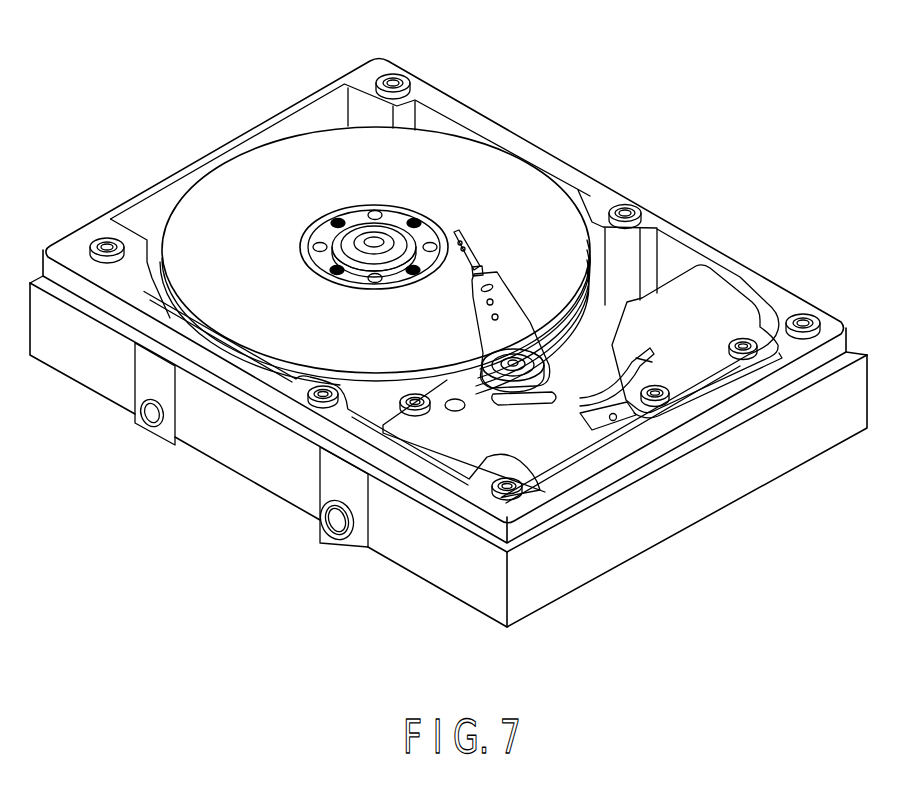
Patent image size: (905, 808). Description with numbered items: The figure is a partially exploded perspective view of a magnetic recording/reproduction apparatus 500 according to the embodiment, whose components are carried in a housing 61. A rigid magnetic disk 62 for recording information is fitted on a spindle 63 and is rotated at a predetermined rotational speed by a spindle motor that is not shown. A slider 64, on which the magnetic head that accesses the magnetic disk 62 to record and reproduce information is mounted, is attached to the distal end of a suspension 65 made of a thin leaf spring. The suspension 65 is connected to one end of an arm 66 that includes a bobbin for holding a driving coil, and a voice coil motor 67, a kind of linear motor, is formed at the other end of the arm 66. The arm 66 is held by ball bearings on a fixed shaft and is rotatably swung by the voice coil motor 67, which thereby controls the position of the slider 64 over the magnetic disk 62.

The magnetic recording/reproduction apparatus 500 is at (597, 81).
The housing 61 is at (750, 463).
The magnetic disk 62 is at (445, 168).
The spindle 63 is at (300, 224).
The slider 64 is at (463, 240).
The suspension 65 is at (493, 300).
The arm 66 is at (500, 370).
The voice coil motor 67 is at (533, 393).